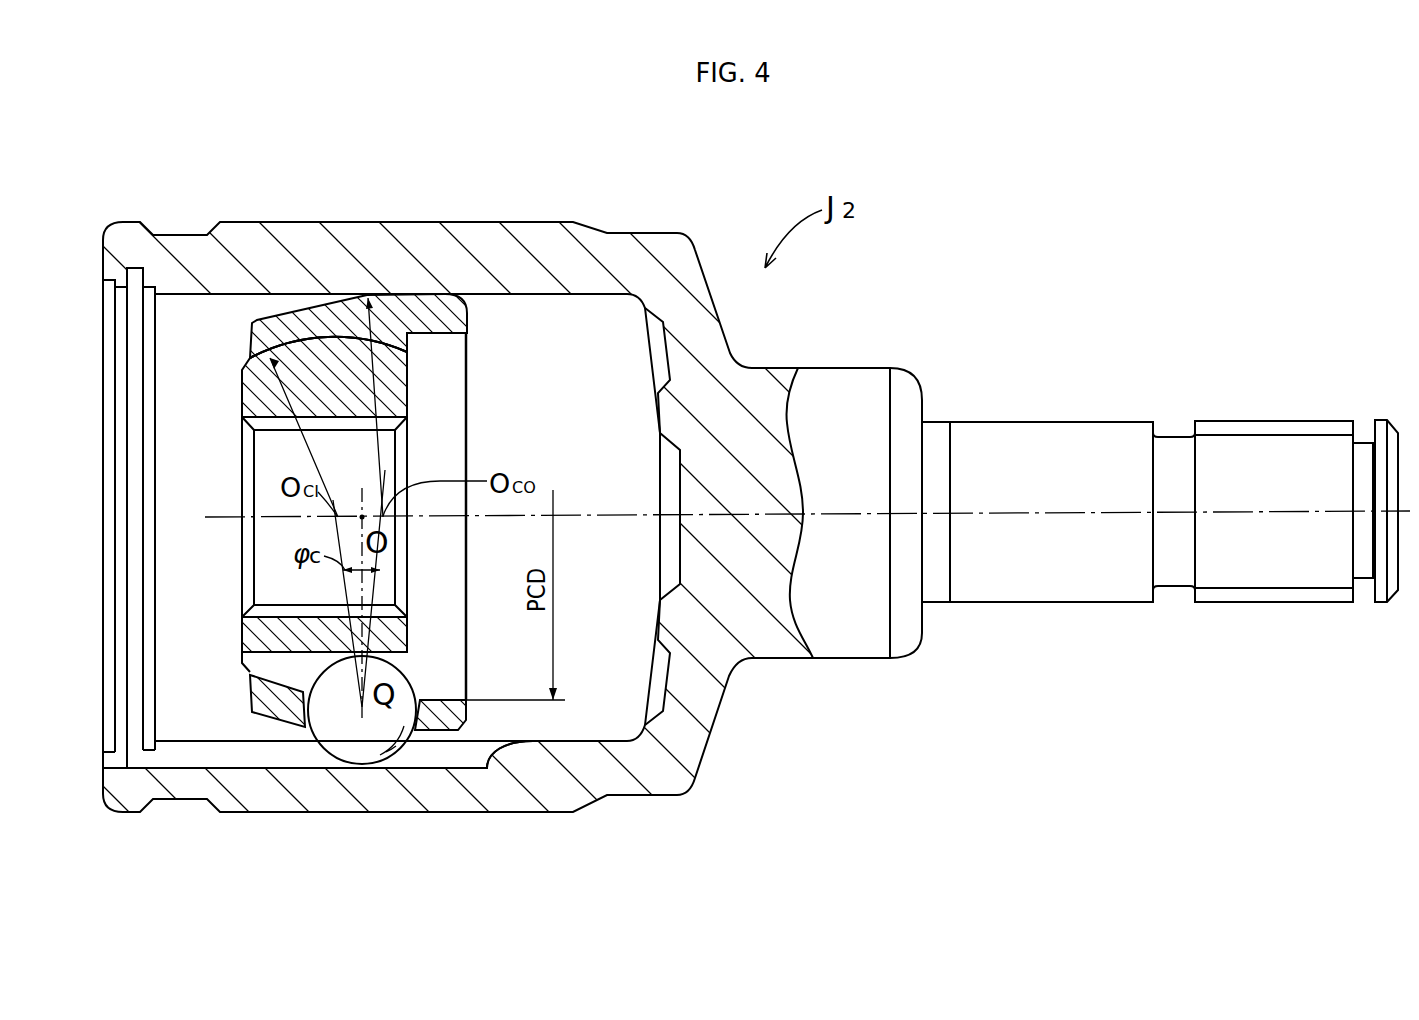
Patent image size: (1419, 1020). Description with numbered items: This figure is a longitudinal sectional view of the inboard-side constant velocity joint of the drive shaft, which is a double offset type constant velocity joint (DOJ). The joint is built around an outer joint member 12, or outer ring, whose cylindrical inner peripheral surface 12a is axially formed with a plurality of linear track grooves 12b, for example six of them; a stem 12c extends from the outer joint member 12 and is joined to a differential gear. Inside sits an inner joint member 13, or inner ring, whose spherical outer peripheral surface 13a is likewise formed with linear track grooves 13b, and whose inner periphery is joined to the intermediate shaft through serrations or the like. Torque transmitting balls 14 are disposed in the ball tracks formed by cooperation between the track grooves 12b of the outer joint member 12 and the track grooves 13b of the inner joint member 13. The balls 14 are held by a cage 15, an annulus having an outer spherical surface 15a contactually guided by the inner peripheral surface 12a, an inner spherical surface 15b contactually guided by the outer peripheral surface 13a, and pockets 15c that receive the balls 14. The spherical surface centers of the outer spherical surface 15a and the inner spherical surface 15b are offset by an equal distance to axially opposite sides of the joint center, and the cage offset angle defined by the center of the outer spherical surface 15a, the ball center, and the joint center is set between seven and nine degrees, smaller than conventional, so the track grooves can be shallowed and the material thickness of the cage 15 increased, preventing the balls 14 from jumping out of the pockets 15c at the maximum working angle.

The outer joint member 12 is at (627, 795).
The cylindrical inner peripheral surface 12a is at (554, 296).
The track grooves 12b is at (460, 753).
The stem 12c is at (1059, 422).
The inner joint member 13 is at (283, 633).
The spherical outer peripheral surface 13a is at (271, 352).
The track grooves 13b is at (250, 668).
The torque transmitting balls 14 is at (356, 764).
The cage 15 is at (300, 700).
The outer spherical surface 15a is at (437, 292).
The inner spherical surface 15b is at (350, 345).
The pockets 15c is at (422, 732).